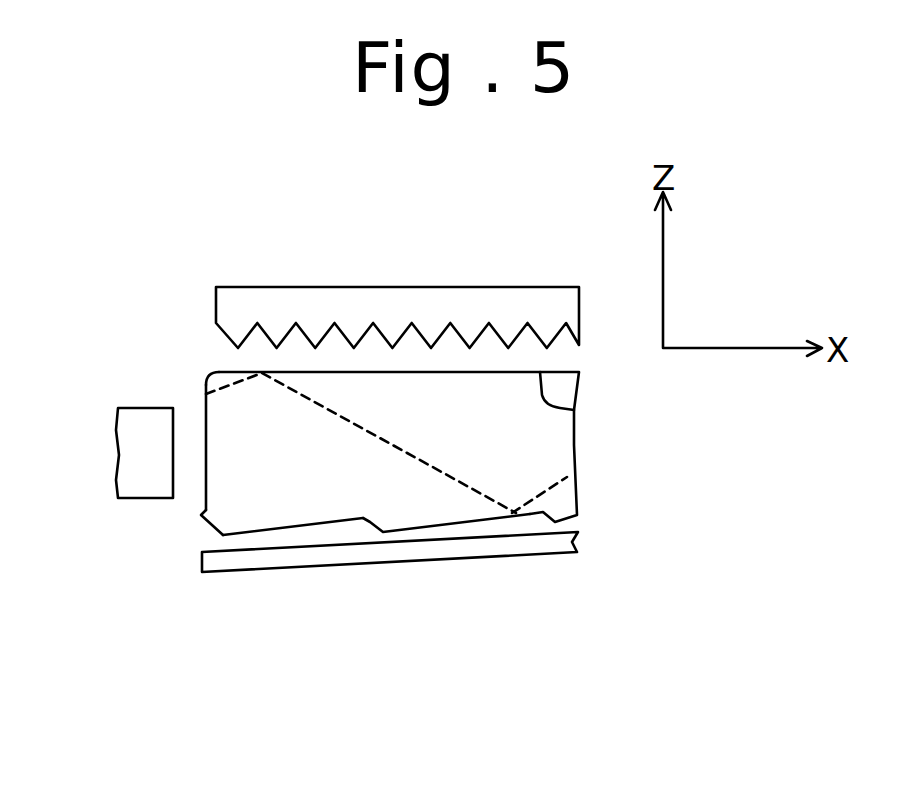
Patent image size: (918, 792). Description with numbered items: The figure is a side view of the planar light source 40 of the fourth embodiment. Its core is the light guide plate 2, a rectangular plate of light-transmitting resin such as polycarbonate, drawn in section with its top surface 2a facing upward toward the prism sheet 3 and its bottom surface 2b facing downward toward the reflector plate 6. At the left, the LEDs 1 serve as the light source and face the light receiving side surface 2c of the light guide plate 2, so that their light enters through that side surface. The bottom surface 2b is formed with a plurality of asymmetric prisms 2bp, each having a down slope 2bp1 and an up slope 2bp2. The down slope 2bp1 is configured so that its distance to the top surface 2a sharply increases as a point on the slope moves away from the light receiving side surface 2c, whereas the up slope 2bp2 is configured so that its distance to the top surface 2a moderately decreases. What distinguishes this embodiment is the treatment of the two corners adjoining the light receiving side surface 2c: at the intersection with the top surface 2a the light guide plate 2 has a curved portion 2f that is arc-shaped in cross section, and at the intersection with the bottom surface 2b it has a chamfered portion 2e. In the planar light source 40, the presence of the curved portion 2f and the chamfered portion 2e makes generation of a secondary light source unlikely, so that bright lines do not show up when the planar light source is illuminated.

The planar light source 40 is at (175, 307).
The prism sheet 3 is at (355, 298).
The light guide plate 2 is at (563, 502).
The top surface 2a is at (574, 411).
The bottom surface 2b is at (442, 527).
The asymmetric prisms 2bp is at (414, 620).
The down slope 2bp1 is at (370, 523).
The up slope 2bp2 is at (277, 528).
The light receiving side surface 2c is at (203, 493).
The chamfered portion 2e is at (200, 530).
The curved portion 2f is at (211, 372).
The LEDs 1 is at (148, 408).
The reflector plate 6 is at (553, 553).